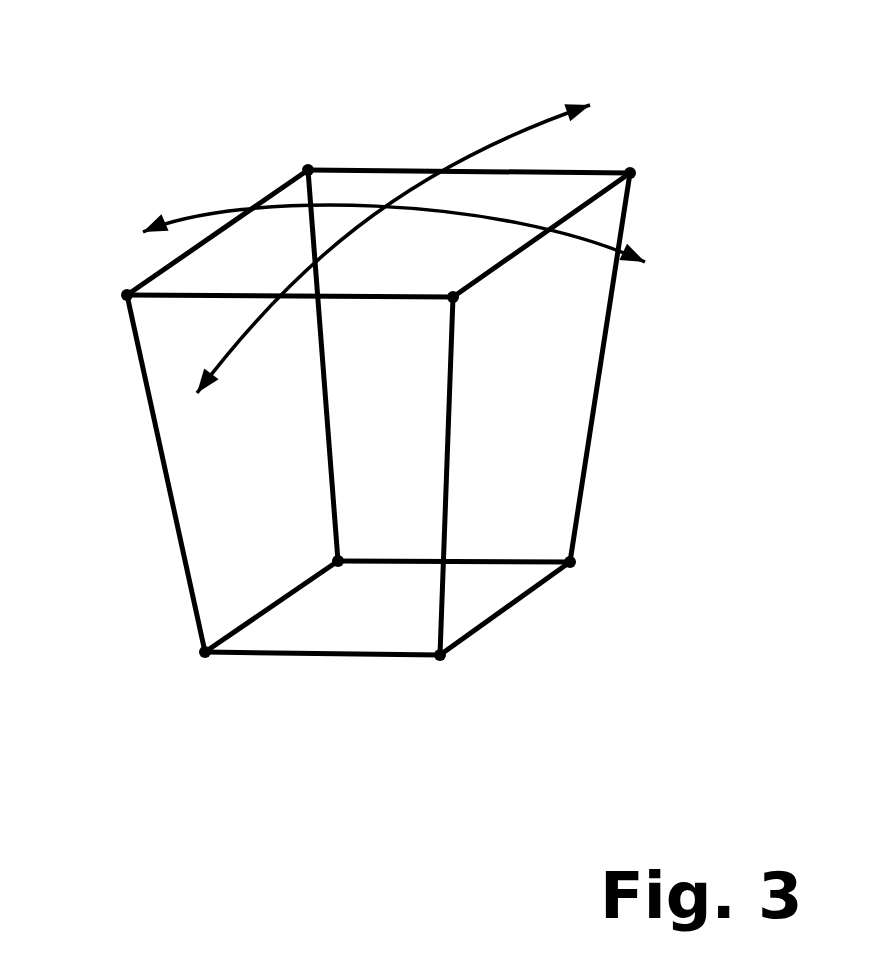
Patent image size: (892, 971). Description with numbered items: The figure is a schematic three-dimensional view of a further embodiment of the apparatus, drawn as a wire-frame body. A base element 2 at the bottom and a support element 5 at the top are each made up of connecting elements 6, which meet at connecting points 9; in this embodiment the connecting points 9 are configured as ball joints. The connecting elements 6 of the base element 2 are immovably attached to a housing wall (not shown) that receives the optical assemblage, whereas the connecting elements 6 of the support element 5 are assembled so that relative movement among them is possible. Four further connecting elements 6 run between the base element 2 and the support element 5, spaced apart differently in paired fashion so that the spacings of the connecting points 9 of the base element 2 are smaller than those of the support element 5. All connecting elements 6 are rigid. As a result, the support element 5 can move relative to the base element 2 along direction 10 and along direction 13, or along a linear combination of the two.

The base element 2 is at (402, 409).
The support element 5 is at (523, 197).
The connecting element 6 is at (330, 455).
The connecting point 9 is at (308, 170).
The direction 10 is at (490, 140).
The direction 13 is at (200, 213).